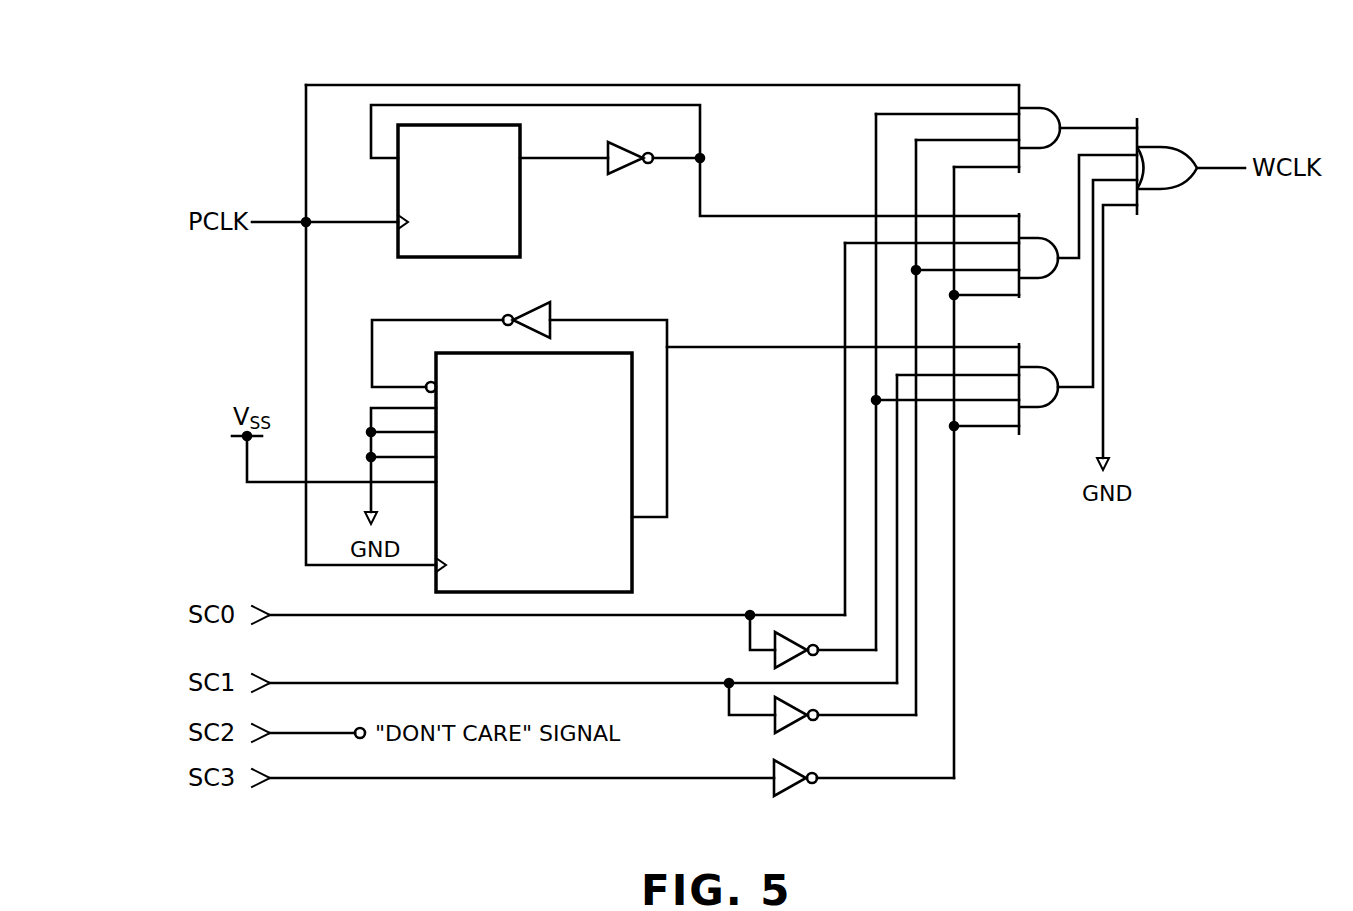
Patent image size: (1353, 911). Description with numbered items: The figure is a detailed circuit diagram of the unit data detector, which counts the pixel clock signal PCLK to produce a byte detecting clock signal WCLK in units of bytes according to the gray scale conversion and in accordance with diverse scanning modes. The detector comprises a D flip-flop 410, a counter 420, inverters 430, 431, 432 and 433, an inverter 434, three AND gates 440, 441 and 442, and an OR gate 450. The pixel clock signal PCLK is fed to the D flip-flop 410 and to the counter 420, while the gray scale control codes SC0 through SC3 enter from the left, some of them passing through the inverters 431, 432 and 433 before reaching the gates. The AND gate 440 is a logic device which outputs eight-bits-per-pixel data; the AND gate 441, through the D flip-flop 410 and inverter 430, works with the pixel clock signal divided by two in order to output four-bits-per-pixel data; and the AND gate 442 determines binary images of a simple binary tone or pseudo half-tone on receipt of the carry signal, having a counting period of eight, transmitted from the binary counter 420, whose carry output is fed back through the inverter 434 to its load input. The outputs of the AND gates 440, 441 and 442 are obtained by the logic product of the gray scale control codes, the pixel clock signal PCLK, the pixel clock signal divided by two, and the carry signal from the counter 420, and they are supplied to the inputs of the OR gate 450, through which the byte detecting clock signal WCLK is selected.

The D flip-flop 410 is at (522, 237).
The counter 420 is at (633, 553).
The inverter 430 is at (617, 176).
The inverter 431 is at (775, 660).
The inverter 432 is at (797, 722).
The inverter 433 is at (797, 786).
The inverter 434 is at (542, 302).
The AND gate 440 is at (1048, 100).
The AND gate 441 is at (1042, 237).
The AND gate 442 is at (1045, 366).
The OR gate 450 is at (1173, 190).